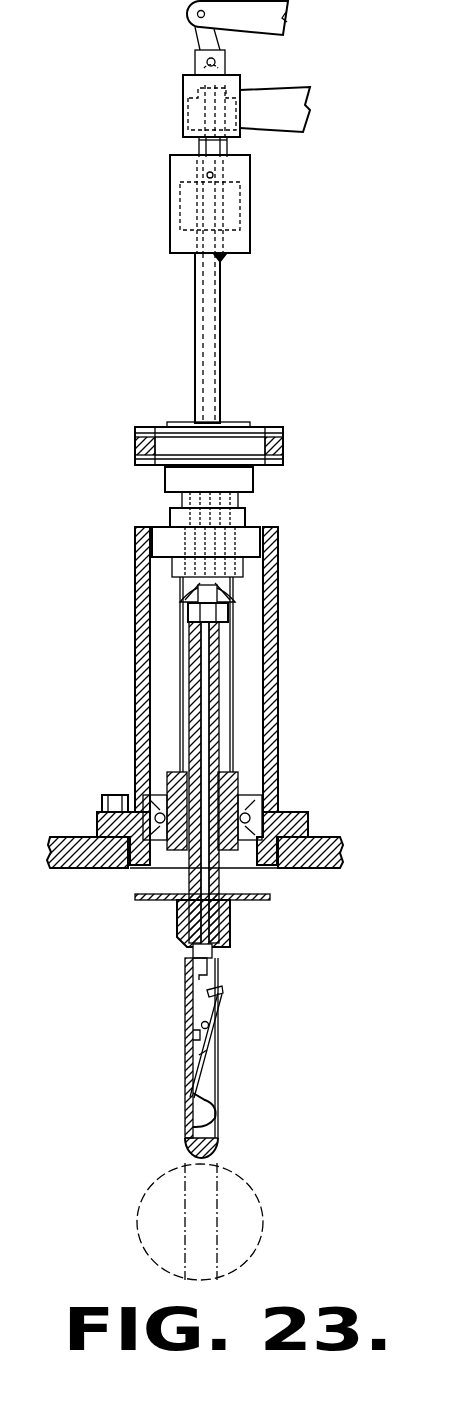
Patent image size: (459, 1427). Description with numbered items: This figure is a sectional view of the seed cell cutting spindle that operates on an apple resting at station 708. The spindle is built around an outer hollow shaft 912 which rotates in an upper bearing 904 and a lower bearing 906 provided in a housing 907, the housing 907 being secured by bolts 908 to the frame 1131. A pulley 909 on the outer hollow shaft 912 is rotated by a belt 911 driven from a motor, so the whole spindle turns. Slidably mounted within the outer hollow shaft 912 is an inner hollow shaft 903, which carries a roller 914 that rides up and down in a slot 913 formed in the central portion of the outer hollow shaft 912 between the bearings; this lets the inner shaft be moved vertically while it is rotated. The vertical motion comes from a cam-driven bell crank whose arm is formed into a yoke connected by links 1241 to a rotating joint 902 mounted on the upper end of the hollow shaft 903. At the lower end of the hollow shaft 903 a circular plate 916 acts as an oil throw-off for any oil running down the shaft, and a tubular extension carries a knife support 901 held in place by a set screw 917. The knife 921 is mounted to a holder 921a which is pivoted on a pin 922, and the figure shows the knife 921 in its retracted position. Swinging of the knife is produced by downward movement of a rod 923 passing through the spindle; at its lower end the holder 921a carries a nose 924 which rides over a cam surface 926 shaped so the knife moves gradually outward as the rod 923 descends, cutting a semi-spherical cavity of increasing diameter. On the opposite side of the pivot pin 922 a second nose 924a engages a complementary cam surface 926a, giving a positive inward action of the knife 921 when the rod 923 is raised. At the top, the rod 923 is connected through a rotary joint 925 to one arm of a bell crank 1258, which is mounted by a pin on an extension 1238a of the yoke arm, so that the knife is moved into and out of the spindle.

The bell crank 1258 is at (292, 23).
The extension of arm 1238a is at (311, 106).
The rotary joint 925 is at (183, 103).
The rod 923 is at (199, 143).
The links 1241 is at (248, 140).
The rotating joint 902 is at (170, 190).
The hollow shaft 903 is at (195, 322).
The pulley 909 is at (268, 428).
The belt 911 is at (284, 445).
The bearing 904 is at (170, 516).
The housing 907 is at (135, 640).
The hollow shaft 912 is at (228, 663).
The roller 914 is at (228, 612).
The slot 913 is at (228, 690).
The bearing 906 is at (148, 800).
The bolts 908 is at (100, 800).
The frame 1131 is at (343, 848).
The circular plate 916 is at (272, 897).
The set screw 917 is at (228, 922).
The knife support 901 is at (188, 1000).
The cam surface 926a is at (190, 961).
The second nose 924a is at (222, 988).
The nose 924 is at (192, 1075).
The pin 922 is at (209, 1025).
The cam surface 926 is at (195, 1035).
The holder 921a is at (212, 1048).
The knife 921 is at (217, 1105).
The station 708 is at (200, 1205).